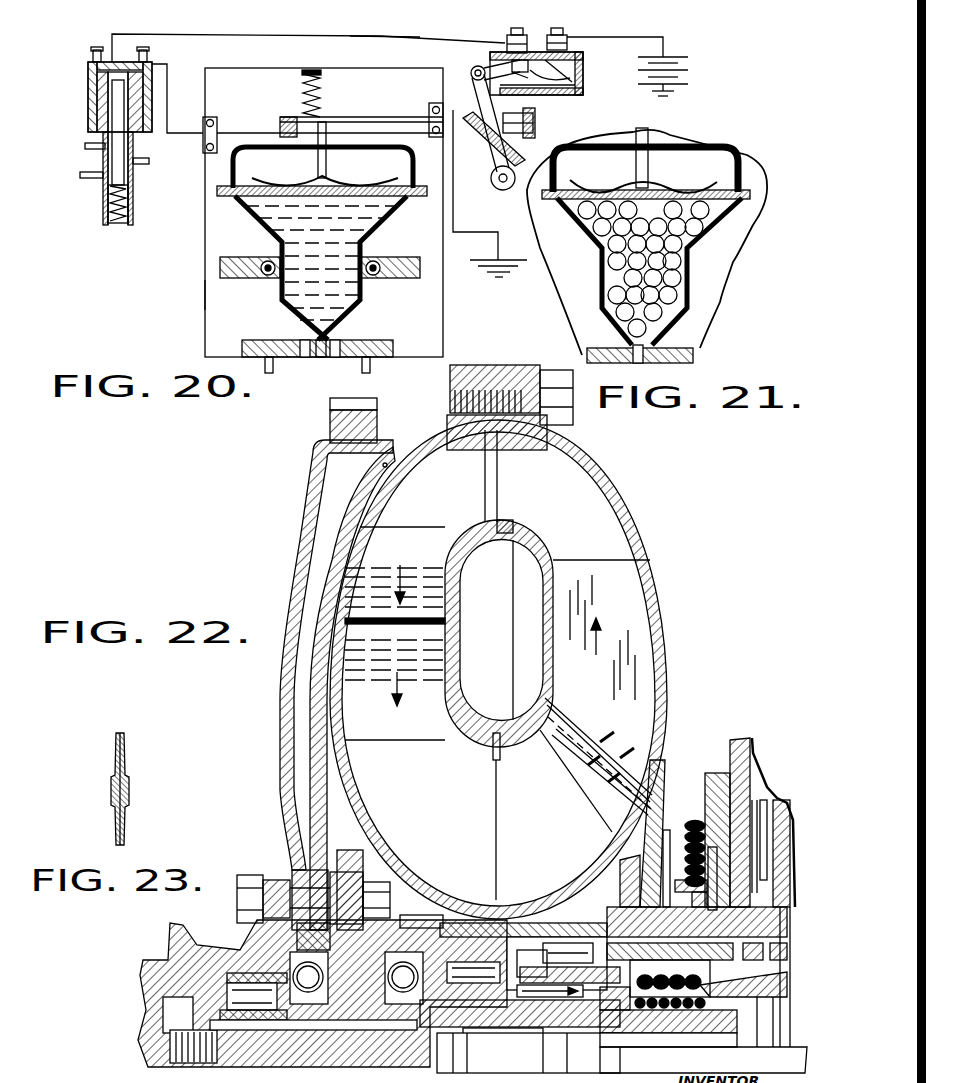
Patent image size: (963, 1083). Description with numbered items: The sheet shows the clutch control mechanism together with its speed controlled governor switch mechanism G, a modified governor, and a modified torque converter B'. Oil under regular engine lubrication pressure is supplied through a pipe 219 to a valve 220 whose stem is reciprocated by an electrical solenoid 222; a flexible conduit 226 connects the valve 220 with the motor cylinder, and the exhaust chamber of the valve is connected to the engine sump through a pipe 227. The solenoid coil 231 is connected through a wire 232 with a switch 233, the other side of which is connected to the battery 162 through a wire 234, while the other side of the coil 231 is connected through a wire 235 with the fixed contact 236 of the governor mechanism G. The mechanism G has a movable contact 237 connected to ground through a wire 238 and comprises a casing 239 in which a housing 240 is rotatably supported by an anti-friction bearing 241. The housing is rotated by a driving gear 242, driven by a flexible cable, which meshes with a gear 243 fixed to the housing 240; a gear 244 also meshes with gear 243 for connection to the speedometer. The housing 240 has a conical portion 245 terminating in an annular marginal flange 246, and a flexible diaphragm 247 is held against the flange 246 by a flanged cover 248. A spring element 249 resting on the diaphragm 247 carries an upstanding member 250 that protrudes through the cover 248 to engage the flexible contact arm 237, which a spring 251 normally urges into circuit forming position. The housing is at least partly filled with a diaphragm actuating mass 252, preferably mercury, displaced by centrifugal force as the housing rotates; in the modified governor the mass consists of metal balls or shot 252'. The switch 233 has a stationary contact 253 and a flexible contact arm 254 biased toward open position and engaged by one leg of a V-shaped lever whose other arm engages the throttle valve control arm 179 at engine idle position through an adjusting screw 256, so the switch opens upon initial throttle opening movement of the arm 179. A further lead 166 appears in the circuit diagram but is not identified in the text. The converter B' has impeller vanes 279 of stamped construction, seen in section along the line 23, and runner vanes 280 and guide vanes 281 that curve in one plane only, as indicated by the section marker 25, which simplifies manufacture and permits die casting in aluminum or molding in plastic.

In FIG. 20, the conductor wire 166 is at (250, 36).
In FIG. 20, the electrical solenoid 222 is at (90, 112).
In FIG. 20, the pipe 219 is at (85, 146).
In FIG. 20, the flexible conduit 226 is at (140, 163).
In FIG. 20, the pipe 227 is at (82, 178).
In FIG. 20, the valve 220 is at (133, 205).
In FIG. 20, the wire 235 is at (167, 114).
In FIG. 20, the wire 232 is at (390, 40).
In FIG. 20, the casing 239 is at (443, 318).
In FIG. 20, the movable contact 237 is at (352, 117).
In FIG. 20, the screw 256 is at (265, 130).
In FIG. 20, the spring 251 is at (305, 88).
In FIG. 20, the upstanding member 250 is at (330, 128).
In FIG. 20, the flanged cover 248 is at (395, 168).
In FIG. 20, the spring element 249 is at (310, 175).
In FIG. 20, the flexible diaphragm 247 is at (321, 268).
In FIG. 20, the diaphragm actuating mass 252 is at (307, 263).
In FIG. 20, the annular marginal flange 246 is at (240, 204).
In FIG. 20, the conical portion 245 is at (367, 230).
In FIG. 20, the anti-friction bearing 241 is at (268, 279).
In FIG. 20, the housing 240 is at (362, 298).
In FIG. 20, the gear 244 is at (268, 340).
In FIG. 20, the gear 243 is at (322, 360).
In FIG. 20, the driving gear 242 is at (375, 370).
In FIG. 20, the wire 238 is at (480, 212).
In FIG. 20, the speed controlled governor switch mechanism G is at (205, 294).
In FIG. 21, the speed controlled governor switch mechanism G is at (707, 267).
In FIG. 20, the stationary contact 253 is at (490, 58).
In FIG. 20, the wire 234 is at (570, 66).
In FIG. 20, the flexible contact arm 254 is at (572, 80).
In FIG. 20, the switch 233 is at (580, 93).
In FIG. 20, the fixed contact 236 is at (535, 120).
In FIG. 20, the solenoid coil 231 is at (478, 106).
In FIG. 20, the throttle valve control arm 179 is at (510, 140).
In FIG. 20, the battery 162 is at (688, 70).
In FIG. 21, the metal balls or shot 252' is at (685, 269).
In FIG. 22, the torque converter B' is at (475, 664).
In FIG. 22, the section line 25 is at (415, 548).
In FIG. 22, the runner vanes 280 is at (360, 554).
In FIG. 22, the guide vanes 281 is at (360, 673).
In FIG. 22, the impeller vanes 279 is at (615, 652).
In FIG. 22, the section line 23 is at (600, 745).